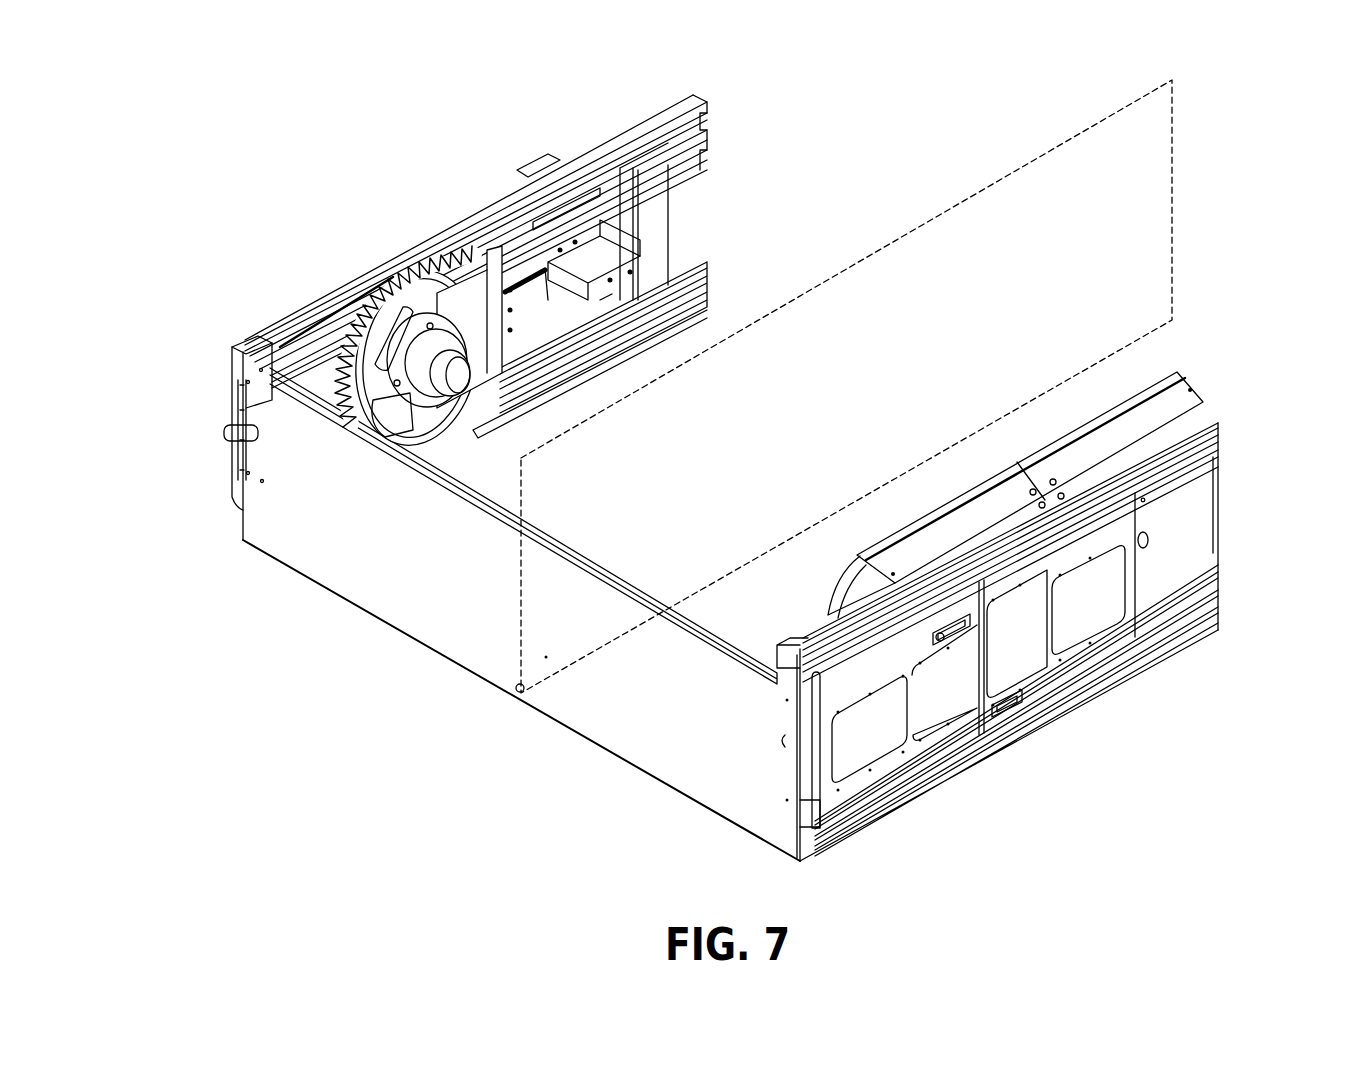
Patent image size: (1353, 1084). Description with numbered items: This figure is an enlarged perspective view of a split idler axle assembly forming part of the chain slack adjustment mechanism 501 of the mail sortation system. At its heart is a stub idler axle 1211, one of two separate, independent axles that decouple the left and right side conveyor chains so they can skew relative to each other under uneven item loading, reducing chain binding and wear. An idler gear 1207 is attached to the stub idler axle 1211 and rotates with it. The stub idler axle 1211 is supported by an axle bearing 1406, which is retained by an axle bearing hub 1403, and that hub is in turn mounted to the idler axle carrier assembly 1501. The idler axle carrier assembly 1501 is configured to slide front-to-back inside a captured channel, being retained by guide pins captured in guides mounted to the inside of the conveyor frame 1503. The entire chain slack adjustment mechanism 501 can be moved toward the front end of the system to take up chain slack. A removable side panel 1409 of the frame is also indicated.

The chain slack adjustment mechanism 501 is at (874, 137).
The side panel (phantom) 1409 is at (1175, 270).
The idler axle carrier assembly 1501 is at (425, 305).
The axle bearing hub 1403 is at (400, 353).
The idler gear 1207 is at (467, 312).
The axle bearing 1406 is at (320, 331).
The stub idler axle 1211 is at (390, 443).
The conveyor frame 1503 is at (707, 298).